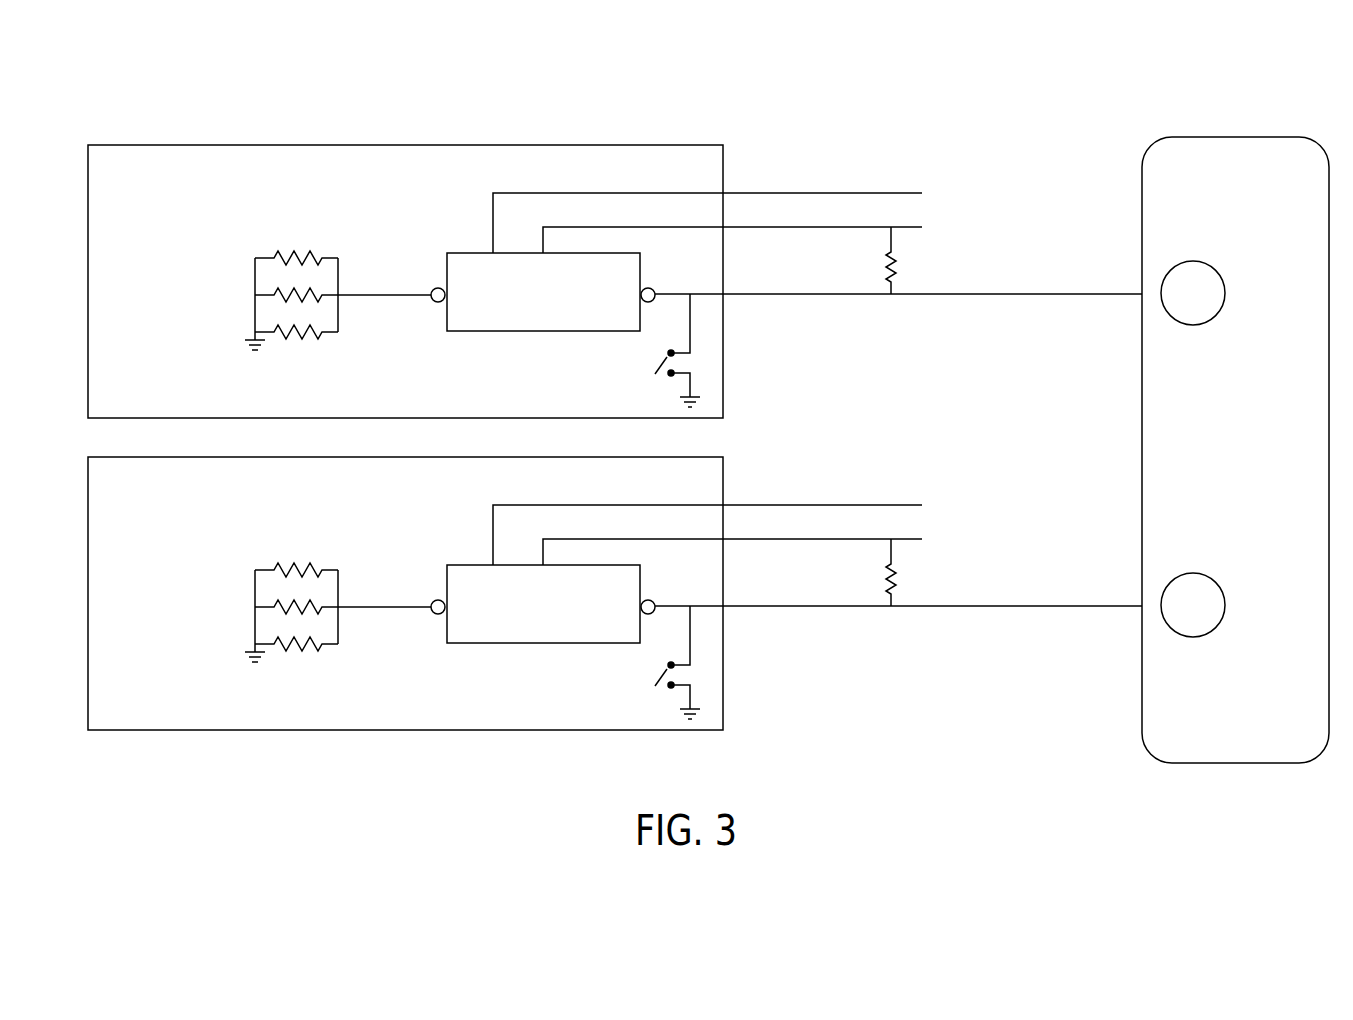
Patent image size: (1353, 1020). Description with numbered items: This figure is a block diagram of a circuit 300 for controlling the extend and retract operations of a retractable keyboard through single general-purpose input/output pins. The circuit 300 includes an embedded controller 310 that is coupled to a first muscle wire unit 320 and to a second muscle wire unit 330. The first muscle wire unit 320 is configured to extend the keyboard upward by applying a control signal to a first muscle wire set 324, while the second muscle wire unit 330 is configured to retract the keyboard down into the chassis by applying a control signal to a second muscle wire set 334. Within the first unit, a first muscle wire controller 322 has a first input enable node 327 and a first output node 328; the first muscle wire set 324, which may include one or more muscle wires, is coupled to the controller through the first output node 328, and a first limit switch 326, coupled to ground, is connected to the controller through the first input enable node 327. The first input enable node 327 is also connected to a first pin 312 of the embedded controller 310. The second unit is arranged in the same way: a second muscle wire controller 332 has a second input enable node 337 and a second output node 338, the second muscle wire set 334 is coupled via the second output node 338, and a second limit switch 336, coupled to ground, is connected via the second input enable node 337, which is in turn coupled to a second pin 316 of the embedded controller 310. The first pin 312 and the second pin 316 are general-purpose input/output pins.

The circuit 300 is at (128, 107).
The embedded controller 310 is at (1237, 137).
The first pin 312 is at (1162, 283).
The second pin 316 is at (1162, 595).
The first muscle wire unit 320 is at (405, 145).
The first muscle wire controller 322 is at (447, 258).
The first muscle wire set 324 is at (283, 256).
The first limit switch 326 is at (692, 344).
The first input enable node 327 is at (655, 291).
The first output node 328 is at (434, 302).
The second muscle wire unit 330 is at (405, 732).
The second muscle wire controller 332 is at (447, 570).
The second muscle wire set 334 is at (283, 568).
The second limit switch 336 is at (692, 656).
The second input enable node 337 is at (655, 603).
The second output node 338 is at (434, 614).